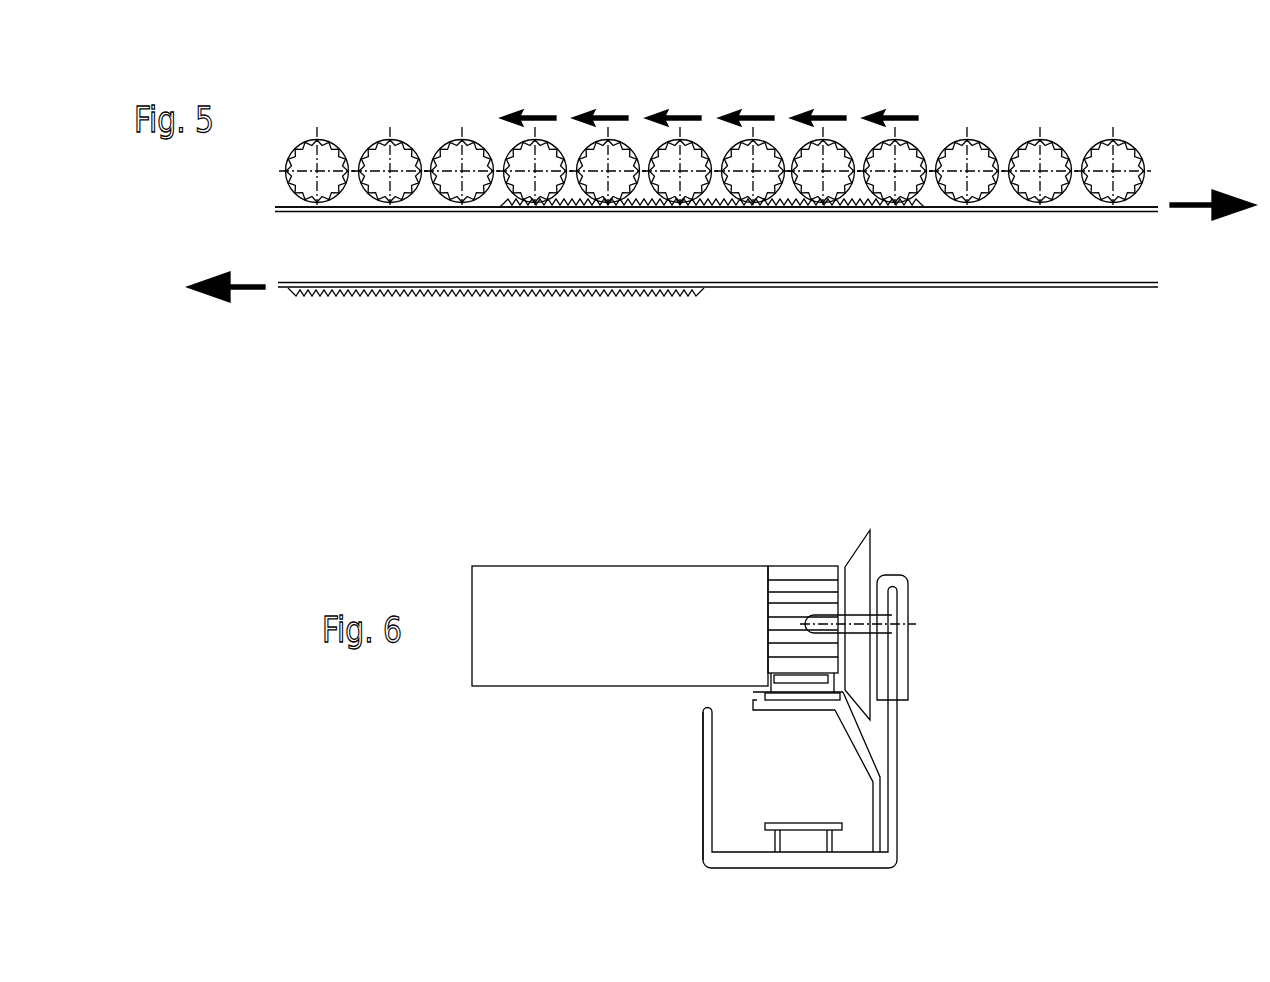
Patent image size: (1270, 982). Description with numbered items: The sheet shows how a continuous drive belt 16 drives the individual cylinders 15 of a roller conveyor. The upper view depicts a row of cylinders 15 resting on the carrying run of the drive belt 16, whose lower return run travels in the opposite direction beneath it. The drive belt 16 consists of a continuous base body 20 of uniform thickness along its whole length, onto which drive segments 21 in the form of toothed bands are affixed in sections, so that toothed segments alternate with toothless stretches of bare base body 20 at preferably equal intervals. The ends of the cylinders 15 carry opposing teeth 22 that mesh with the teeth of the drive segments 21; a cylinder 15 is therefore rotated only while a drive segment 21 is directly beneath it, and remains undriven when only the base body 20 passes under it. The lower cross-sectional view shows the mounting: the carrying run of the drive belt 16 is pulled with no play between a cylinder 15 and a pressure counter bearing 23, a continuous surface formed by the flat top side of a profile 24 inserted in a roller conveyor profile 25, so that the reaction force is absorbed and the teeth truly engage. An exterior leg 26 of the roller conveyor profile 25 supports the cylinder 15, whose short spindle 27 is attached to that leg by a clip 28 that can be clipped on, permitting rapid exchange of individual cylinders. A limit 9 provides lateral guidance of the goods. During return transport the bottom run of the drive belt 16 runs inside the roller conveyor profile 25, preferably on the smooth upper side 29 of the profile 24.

In FIG. 6, the limit 9 is at (857, 550).
In FIG. 5, the cylinder 15 is at (715, 127).
In FIG. 6, the cylinder 15 is at (607, 582).
In FIG. 5, the drive belt 16 is at (365, 212).
In FIG. 6, the drive belt 16 is at (806, 699).
In FIG. 5, the base body 20 is at (1032, 212).
In FIG. 5, the drive segment 21 is at (862, 205).
In FIG. 5, the opposing teeth 22 is at (330, 145).
In FIG. 6, the opposing teeth 22 is at (798, 562).
In FIG. 6, the pressure counter bearing 23 is at (773, 708).
In FIG. 6, the profile 24 is at (877, 760).
In FIG. 6, the roller conveyor profile 25 is at (703, 825).
In FIG. 6, the exterior leg 26 is at (897, 742).
In FIG. 6, the short spindle 27 is at (853, 617).
In FIG. 6, the clip 28 is at (903, 643).
In FIG. 6, the smooth upper side 29 is at (748, 838).